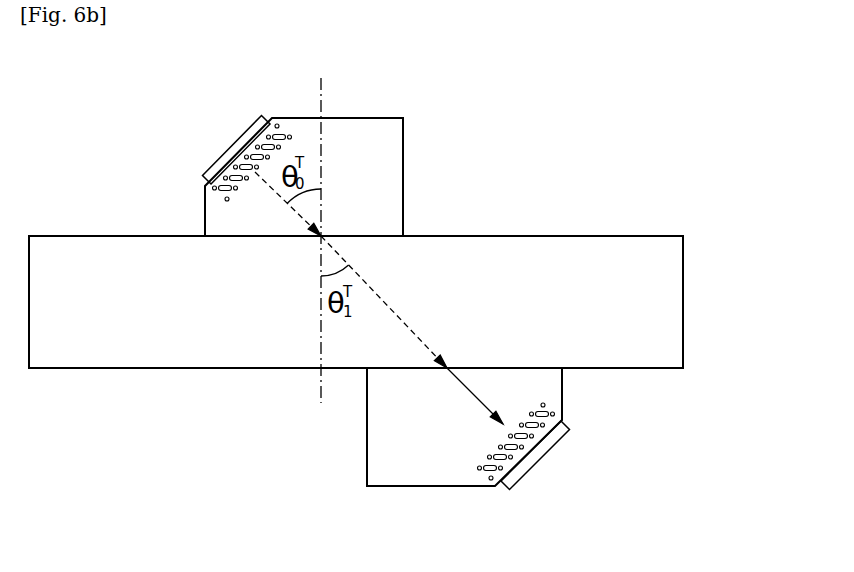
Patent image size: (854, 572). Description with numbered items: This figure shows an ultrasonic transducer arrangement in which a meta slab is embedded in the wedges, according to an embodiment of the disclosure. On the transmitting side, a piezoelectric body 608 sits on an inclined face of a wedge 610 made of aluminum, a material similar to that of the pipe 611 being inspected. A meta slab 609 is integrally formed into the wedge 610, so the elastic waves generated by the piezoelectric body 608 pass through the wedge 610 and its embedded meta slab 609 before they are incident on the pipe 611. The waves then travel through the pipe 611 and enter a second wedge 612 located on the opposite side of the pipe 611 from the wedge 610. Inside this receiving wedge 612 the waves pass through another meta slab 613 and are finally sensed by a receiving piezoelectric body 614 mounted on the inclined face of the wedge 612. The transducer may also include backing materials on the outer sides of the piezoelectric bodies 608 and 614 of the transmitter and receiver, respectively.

The piezoelectric body 608 is at (237, 147).
The meta slab 609 is at (285, 124).
The wedge 610 is at (403, 165).
The pipe 611 is at (683, 300).
The wedge 612 is at (367, 446).
The meta slab 613 is at (483, 481).
The piezoelectric body 614 is at (530, 459).